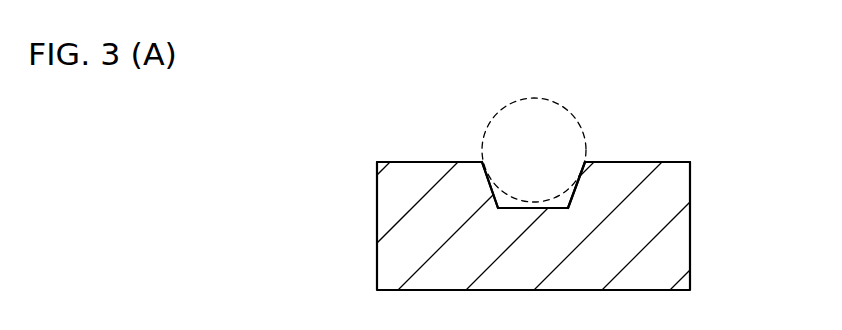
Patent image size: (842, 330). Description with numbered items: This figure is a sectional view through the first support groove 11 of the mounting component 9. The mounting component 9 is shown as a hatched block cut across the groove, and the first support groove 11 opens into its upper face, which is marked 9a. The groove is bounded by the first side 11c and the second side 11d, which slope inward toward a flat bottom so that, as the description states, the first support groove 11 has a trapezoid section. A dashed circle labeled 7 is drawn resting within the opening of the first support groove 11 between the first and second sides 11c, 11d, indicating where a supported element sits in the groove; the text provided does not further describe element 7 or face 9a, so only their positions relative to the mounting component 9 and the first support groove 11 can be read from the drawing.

The optical fiber 7 is at (513, 100).
The mounting component 9 is at (690, 234).
The top surface of substrate 9a is at (672, 162).
The first support groove 11 is at (532, 204).
The first side 11c is at (569, 194).
The second side 11d is at (503, 174).